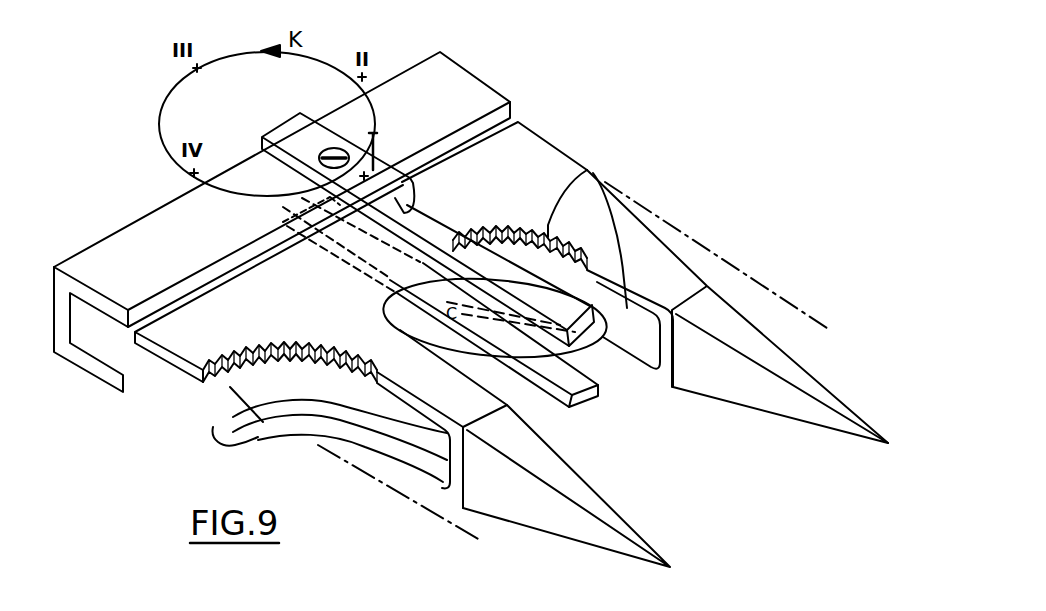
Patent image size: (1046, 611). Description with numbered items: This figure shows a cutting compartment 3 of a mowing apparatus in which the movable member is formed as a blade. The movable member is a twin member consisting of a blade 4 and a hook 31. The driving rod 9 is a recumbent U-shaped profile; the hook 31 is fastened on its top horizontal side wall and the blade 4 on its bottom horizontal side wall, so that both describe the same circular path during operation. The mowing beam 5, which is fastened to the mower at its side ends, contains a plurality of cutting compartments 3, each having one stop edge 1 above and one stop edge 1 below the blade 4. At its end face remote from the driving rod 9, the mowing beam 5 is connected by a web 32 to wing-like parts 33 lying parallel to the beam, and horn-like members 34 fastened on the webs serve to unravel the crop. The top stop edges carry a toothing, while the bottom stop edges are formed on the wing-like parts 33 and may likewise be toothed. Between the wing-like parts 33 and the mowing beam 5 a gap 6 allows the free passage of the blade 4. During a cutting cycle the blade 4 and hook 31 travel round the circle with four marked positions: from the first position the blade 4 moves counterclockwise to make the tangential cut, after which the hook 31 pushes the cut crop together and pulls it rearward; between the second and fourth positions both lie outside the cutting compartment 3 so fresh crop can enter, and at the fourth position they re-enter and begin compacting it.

The stop edge 1 is at (590, 167).
The cutting compartment 3 is at (672, 456).
The blade 4 is at (577, 410).
The mowing beam 5 is at (568, 153).
The gap 6 is at (653, 247).
The driving rod 9 is at (490, 85).
The hook 31 is at (583, 343).
The web 32 is at (457, 483).
The wing-like part 33 is at (410, 447).
The horn-like member 34 is at (752, 407).